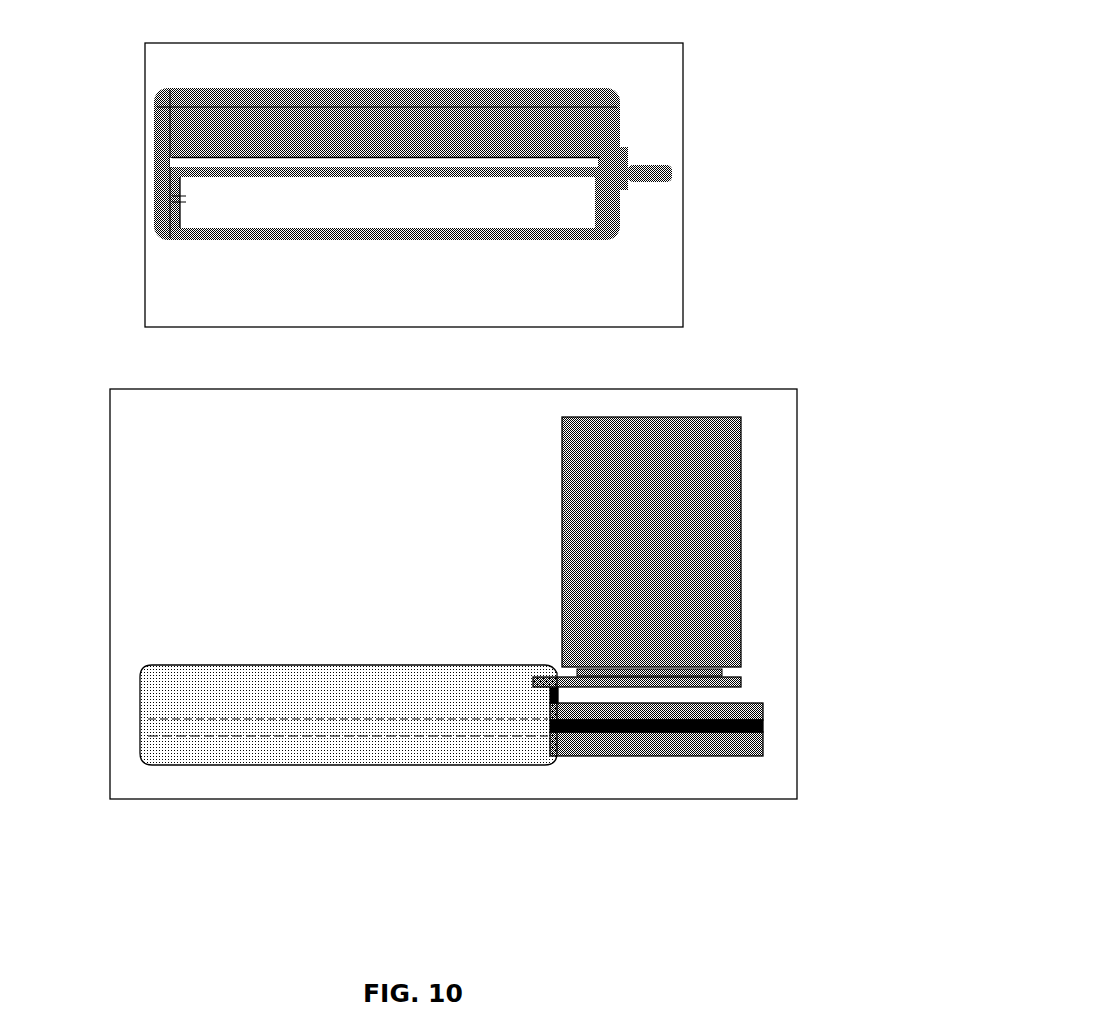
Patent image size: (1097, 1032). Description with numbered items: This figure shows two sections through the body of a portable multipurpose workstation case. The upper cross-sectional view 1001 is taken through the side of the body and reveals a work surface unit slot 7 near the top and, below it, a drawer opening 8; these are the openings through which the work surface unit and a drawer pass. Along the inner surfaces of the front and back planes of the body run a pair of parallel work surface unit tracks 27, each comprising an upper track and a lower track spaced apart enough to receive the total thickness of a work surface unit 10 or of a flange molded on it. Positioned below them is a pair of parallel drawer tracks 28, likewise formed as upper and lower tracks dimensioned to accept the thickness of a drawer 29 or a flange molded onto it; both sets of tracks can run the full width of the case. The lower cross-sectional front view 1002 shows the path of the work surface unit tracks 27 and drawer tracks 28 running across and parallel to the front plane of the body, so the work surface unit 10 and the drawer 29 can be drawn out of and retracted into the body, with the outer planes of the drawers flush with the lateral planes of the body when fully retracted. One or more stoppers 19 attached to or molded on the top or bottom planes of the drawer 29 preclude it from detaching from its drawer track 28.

The cross-sectional view 1001 is at (478, 164).
The cross-sectional front view 1002 is at (490, 572).
The work surface unit slot 7 is at (385, 111).
The drawer opening 8 is at (387, 237).
The work surface unit track 27 is at (395, 389).
The drawer track 28 is at (389, 462).
The work surface unit 10 is at (705, 552).
The stopper 19 is at (490, 784).
The drawer 29 is at (709, 721).